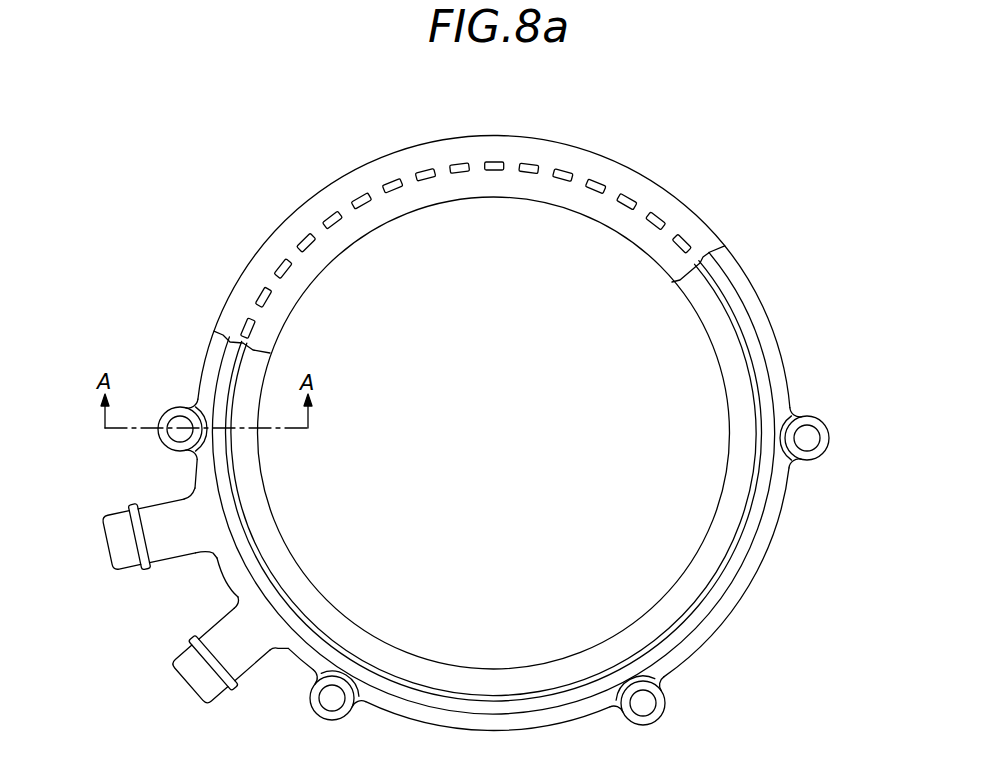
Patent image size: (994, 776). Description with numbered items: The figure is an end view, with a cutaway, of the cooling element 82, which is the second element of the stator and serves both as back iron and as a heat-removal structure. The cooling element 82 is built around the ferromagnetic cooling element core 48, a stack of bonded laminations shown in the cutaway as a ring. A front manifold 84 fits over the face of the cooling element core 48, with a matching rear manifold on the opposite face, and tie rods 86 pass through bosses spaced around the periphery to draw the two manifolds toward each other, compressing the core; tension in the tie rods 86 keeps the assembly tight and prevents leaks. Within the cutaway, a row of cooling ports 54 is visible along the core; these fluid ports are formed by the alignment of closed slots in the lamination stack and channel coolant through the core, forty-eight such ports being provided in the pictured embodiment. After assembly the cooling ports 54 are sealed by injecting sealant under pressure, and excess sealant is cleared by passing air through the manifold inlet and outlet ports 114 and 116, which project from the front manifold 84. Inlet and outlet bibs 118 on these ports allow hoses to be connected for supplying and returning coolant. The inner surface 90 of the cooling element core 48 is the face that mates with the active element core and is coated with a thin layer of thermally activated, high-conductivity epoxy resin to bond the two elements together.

The cooling element 82 is at (346, 106).
The cooling element core 48 is at (502, 209).
The cooling ports 54 is at (667, 218).
The front manifold 84 is at (772, 332).
The tie rods 86 is at (808, 438).
The surface 90 is at (353, 245).
The manifold inlet port 114 is at (110, 558).
The manifold outlet port 116 is at (183, 688).
The inlet and outlet bibs 118 is at (130, 503).